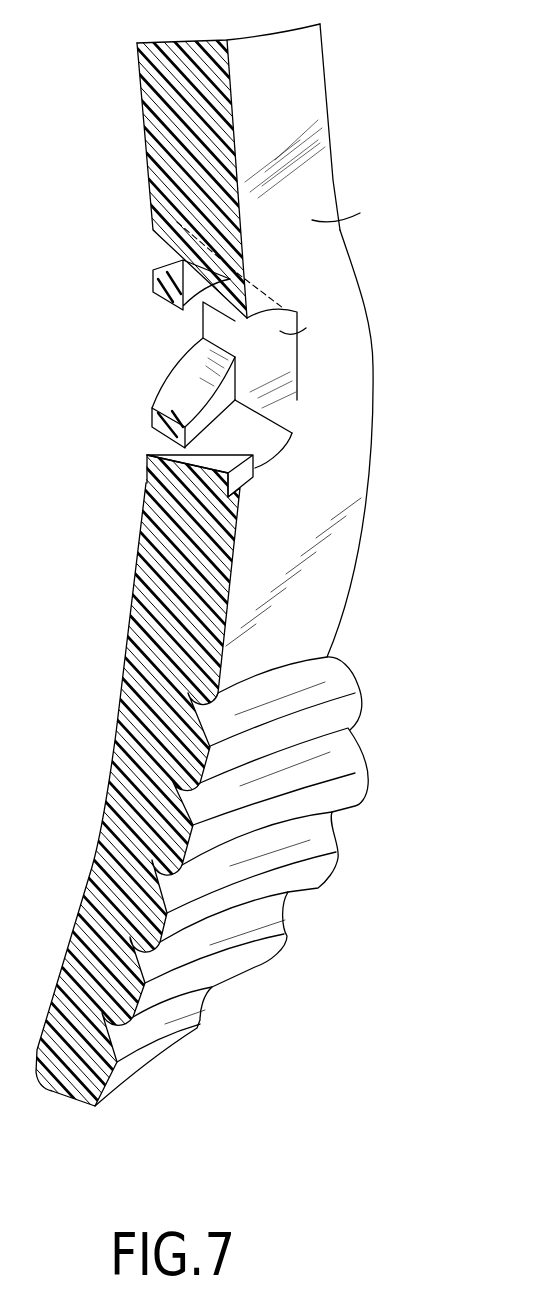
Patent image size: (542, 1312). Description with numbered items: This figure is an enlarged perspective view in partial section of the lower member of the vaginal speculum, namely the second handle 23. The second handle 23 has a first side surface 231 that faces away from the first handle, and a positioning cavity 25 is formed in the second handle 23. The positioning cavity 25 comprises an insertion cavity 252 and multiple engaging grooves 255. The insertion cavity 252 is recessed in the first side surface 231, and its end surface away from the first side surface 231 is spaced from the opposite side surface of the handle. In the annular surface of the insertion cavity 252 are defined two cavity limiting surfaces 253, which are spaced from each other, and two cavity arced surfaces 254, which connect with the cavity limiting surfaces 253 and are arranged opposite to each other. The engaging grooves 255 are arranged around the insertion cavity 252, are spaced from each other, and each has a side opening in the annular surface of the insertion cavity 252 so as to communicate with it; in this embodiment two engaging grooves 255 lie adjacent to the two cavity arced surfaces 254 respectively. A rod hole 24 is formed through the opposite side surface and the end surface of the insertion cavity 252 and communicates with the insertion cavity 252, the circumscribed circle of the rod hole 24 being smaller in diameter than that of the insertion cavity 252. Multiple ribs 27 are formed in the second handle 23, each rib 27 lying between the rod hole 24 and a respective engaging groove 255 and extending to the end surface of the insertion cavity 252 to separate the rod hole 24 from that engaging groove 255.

The second handle 23 is at (348, 138).
The first side surface 231 is at (312, 220).
The rod hole 24 is at (172, 408).
The positioning cavity 25 is at (322, 371).
The ribs 27 is at (150, 427).
The insertion cavity 252 is at (290, 406).
The cavity limiting surface 253 is at (282, 334).
The cavity arced surface 254 is at (274, 447).
The engaging grooves 255 is at (177, 452).